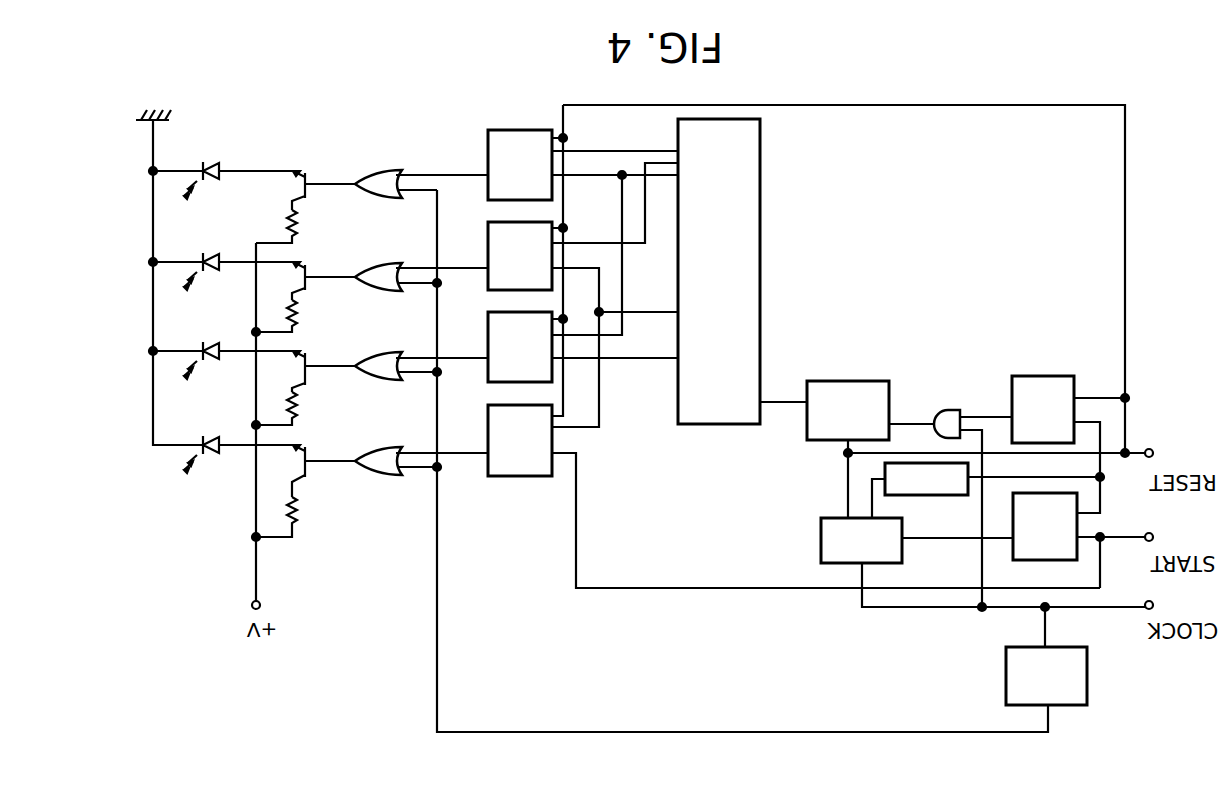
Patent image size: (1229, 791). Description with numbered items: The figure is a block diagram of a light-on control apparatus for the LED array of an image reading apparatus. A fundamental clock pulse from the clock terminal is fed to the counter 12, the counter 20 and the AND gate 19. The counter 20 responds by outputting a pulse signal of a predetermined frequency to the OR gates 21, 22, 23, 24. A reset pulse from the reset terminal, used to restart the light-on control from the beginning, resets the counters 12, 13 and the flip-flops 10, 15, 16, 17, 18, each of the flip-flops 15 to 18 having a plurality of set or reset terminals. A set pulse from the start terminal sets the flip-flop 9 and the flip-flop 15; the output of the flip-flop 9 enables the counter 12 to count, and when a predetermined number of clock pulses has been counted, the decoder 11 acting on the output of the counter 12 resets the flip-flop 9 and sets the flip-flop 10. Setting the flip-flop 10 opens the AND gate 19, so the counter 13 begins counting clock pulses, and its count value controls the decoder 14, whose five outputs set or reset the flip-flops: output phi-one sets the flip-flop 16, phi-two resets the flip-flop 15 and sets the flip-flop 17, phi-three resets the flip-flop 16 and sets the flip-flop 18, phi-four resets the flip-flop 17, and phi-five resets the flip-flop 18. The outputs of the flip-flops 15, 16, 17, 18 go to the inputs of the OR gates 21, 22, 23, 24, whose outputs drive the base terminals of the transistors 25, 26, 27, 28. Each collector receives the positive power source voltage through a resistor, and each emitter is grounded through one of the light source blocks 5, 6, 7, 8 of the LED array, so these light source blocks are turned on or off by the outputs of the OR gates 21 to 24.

The light source block 5 is at (225, 464).
The light source block 6 is at (219, 361).
The light source block 7 is at (212, 272).
The light source block 8 is at (214, 181).
The flip-flop 9 is at (1022, 560).
The flip-flop 10 is at (1020, 376).
The decoder 11 is at (935, 495).
The counter 12 is at (821, 540).
The counter 13 is at (848, 380).
The decoder 14 is at (720, 425).
The flip-flop 15 is at (502, 476).
The flip-flop 16 is at (502, 382).
The flip-flop 17 is at (500, 290).
The flip-flop 18 is at (500, 200).
The AND gate 19 is at (948, 410).
The counter 20 is at (1006, 675).
The OR gate 21 is at (388, 476).
The OR gate 22 is at (388, 380).
The OR gate 23 is at (388, 290).
The OR gate 24 is at (388, 198).
The transistor 25 is at (306, 488).
The transistor 26 is at (306, 388).
The transistor 27 is at (304, 297).
The transistor 28 is at (304, 205).